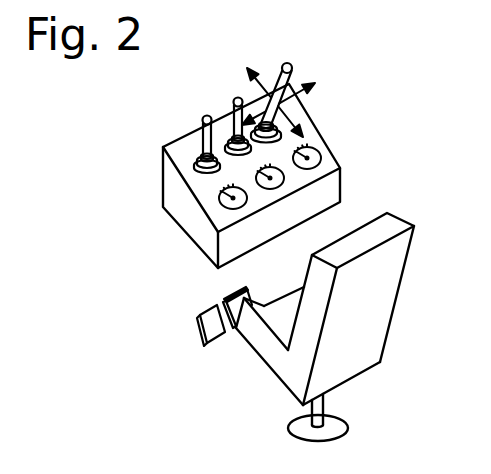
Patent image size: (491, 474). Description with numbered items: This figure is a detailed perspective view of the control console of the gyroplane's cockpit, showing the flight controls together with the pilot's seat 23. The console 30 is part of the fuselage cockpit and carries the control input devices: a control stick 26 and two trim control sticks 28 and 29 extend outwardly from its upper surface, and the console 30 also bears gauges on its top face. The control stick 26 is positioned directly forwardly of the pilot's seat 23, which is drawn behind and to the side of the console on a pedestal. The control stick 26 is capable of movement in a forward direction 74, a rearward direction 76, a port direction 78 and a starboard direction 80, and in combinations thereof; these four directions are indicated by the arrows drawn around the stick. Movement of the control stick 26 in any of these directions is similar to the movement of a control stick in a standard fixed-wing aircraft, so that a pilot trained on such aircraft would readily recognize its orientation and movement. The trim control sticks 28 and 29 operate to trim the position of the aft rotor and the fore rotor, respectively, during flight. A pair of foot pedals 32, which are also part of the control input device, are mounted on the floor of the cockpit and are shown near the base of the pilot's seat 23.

The pilot's seat 23 is at (392, 222).
The control stick 26 is at (292, 64).
The trim control stick 28 is at (203, 121).
The trim control stick 29 is at (232, 106).
The console 30 is at (319, 148).
The foot pedals 32 is at (197, 285).
The forward direction 74 is at (265, 90).
The rearward direction 76 is at (296, 114).
The port direction 78 is at (241, 98).
The starboard direction 80 is at (294, 76).